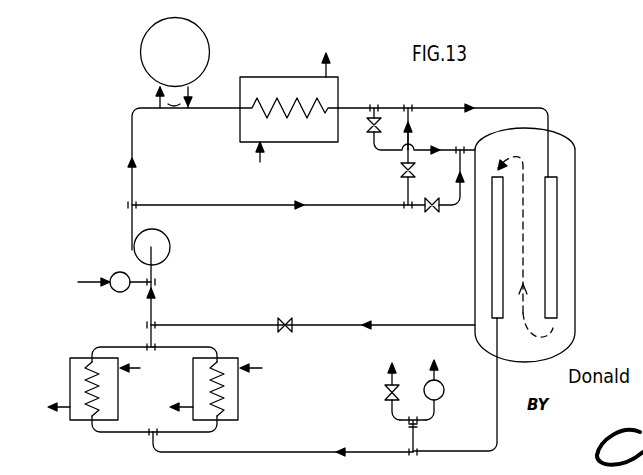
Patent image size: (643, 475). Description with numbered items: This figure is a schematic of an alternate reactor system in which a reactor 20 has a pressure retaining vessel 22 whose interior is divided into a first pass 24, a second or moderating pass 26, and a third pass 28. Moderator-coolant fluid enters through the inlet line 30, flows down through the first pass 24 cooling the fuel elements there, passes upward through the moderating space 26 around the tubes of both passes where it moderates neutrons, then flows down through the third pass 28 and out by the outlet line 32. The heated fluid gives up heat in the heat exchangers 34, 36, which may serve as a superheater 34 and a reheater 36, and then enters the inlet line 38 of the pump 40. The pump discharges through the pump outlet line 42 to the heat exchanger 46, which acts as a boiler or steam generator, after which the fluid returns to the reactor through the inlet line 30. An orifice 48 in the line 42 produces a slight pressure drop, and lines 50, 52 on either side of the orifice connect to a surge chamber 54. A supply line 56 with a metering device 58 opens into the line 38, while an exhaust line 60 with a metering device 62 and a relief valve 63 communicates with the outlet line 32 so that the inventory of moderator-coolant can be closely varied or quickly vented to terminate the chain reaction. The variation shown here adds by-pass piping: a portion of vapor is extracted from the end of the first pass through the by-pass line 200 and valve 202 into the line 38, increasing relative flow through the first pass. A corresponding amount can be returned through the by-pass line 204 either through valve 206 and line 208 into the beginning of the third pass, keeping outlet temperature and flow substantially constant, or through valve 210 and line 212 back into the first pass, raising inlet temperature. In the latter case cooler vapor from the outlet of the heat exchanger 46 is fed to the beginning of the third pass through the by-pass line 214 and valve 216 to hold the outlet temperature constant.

The reactor 20 is at (540, 245).
The pressure retaining vessel 22 is at (576, 226).
The first pass 24 is at (552, 258).
The moderating pass 26 is at (514, 234).
The third pass 28 is at (492, 238).
The inlet line 30 is at (497, 107).
The outlet line 32 is at (500, 381).
The heat exchanger 34 is at (76, 378).
The heat exchanger 36 is at (232, 398).
The inlet line 38 is at (150, 339).
The pump 40 is at (140, 250).
The pump outlet line 42 is at (132, 128).
The heat exchanger 46 is at (299, 128).
The orifice 48 is at (174, 113).
The line 50 is at (158, 101).
The line 52 is at (190, 100).
The surge chamber 54 is at (164, 54).
The moderator-coolant fluid supply line 56 is at (154, 283).
The metering device 58 is at (114, 288).
The exhaust line 60 is at (415, 438).
The metering device 62 is at (440, 389).
The relief valve 63 is at (386, 395).
The by-pass line 200 is at (328, 323).
The valve 202 is at (283, 320).
The by-pass line 204 is at (228, 208).
The valve 206 is at (432, 213).
The line 208 is at (457, 186).
The valve 210 is at (401, 172).
The line 212 is at (412, 138).
The by-pass line 214 is at (391, 150).
The valve 216 is at (371, 130).